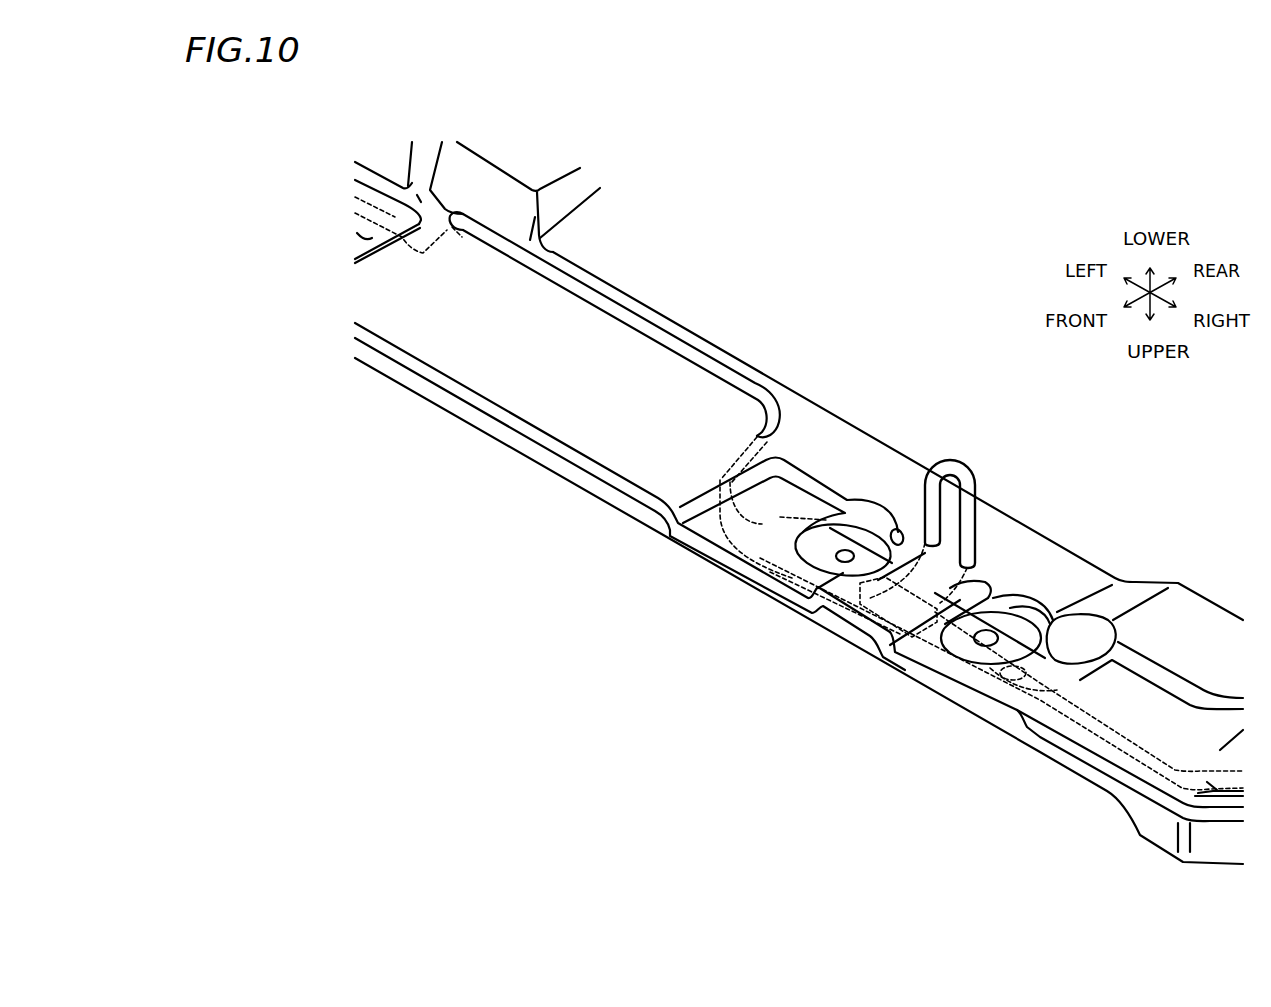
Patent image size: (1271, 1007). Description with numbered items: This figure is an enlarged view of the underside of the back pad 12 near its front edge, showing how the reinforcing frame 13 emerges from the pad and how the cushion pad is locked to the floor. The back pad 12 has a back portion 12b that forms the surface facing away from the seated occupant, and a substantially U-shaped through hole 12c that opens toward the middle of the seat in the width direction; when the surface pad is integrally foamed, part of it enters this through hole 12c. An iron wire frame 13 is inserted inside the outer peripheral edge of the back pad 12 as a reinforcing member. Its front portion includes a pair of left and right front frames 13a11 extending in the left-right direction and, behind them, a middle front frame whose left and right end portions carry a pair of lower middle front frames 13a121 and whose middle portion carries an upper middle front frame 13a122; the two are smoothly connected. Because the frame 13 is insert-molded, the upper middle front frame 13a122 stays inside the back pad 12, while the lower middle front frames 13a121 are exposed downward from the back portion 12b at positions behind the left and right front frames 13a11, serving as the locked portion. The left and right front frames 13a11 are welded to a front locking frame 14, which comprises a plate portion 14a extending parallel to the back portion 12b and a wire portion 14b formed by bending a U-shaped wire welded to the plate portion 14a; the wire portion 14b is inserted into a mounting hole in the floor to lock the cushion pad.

The back pad 12 is at (522, 453).
The back portion 12b is at (467, 325).
The through hole 12c is at (847, 420).
The frame 13 is at (1157, 750).
The left and right front frames 13a11 is at (1117, 730).
The lower middle front frames 13a121 is at (645, 325).
The upper middle front frame 13a122 is at (373, 223).
The front locking frame 14 is at (913, 648).
The plate portion 14a is at (985, 715).
The wire portion 14b is at (958, 463).